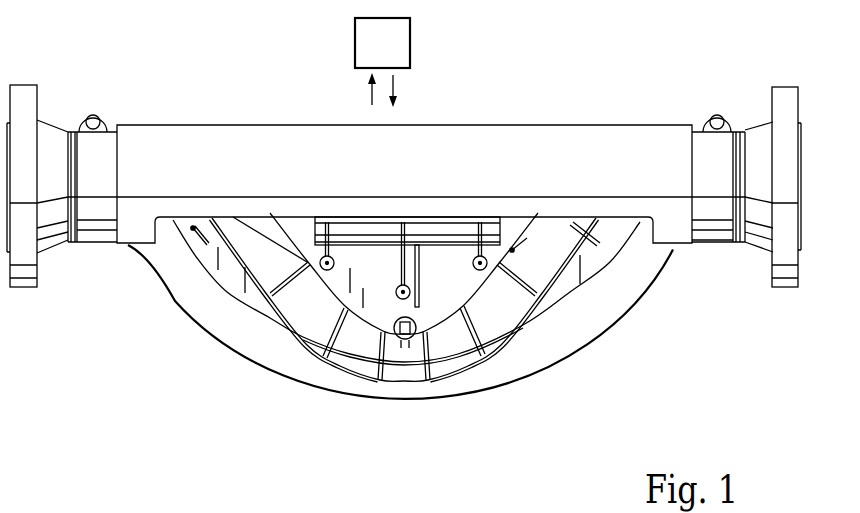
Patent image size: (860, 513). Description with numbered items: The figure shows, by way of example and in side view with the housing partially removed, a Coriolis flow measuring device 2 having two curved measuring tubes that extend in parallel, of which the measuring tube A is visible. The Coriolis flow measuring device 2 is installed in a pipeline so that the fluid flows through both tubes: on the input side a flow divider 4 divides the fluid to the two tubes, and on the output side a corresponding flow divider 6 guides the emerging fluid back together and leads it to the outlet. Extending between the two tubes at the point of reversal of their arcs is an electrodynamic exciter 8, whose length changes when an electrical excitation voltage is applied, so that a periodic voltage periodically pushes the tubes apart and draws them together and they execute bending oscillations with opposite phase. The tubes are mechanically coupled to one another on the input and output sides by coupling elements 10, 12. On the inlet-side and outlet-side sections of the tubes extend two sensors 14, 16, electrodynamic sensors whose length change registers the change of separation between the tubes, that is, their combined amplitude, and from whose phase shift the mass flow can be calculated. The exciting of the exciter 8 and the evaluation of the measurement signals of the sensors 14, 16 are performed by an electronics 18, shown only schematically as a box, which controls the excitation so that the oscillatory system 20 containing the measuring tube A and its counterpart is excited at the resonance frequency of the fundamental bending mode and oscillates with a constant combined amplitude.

The Coriolis flow measuring device 2 is at (189, 110).
The flow divider 4 is at (52, 148).
The flow divider 6 is at (756, 156).
The exciter 8 is at (430, 320).
The coupling element 10 is at (178, 237).
The coupling element 12 is at (590, 238).
The sensor 14 is at (203, 328).
The sensor 16 is at (578, 304).
The electronics 18 is at (400, 40).
The oscillatory system 20 is at (414, 319).
The measuring tube A is at (363, 352).